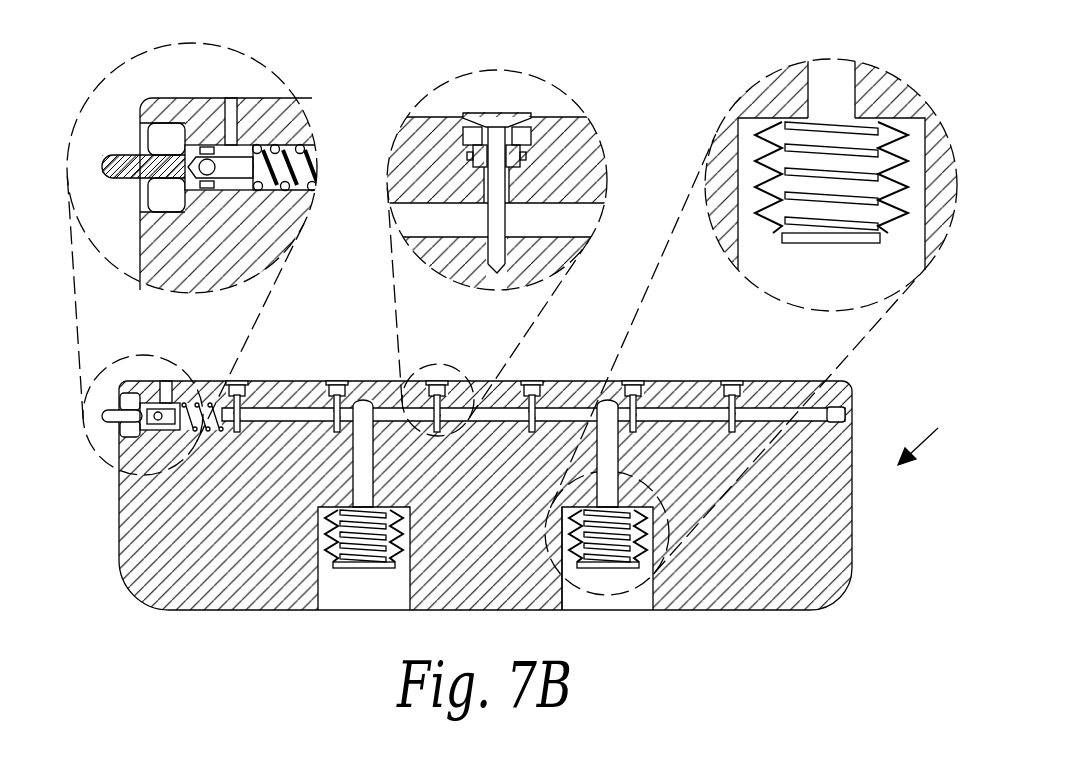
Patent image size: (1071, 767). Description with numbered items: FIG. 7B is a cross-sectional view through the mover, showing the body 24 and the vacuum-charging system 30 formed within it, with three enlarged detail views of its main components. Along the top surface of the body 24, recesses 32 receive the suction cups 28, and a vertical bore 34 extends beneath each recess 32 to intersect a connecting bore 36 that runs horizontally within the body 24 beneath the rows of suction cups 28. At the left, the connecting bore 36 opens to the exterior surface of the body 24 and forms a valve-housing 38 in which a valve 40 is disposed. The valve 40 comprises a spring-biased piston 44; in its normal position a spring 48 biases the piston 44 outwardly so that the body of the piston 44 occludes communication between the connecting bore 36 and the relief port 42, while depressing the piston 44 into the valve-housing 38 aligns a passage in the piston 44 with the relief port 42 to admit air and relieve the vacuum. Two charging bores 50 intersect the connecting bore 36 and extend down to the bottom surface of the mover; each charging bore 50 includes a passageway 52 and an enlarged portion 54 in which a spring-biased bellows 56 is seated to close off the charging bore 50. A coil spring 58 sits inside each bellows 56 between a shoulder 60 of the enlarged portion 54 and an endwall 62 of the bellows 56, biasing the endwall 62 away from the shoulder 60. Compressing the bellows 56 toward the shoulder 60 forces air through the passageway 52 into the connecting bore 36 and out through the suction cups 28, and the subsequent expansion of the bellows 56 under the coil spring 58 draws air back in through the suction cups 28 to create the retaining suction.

The body 24 is at (826, 563).
The suction cups 28 is at (500, 117).
The vacuum-charging system 30 is at (930, 431).
The recesses 32 is at (463, 128).
The vertical bore 34 is at (508, 178).
The connecting bore 36 is at (300, 408).
The valve-housing 38 is at (182, 400).
The valve 40 is at (195, 133).
The relief port 42 is at (228, 100).
The piston 44 is at (102, 166).
The spring 48 is at (314, 145).
The charging bores 50 is at (738, 230).
The passageway 52 is at (857, 80).
The enlarged portion 54 is at (563, 560).
The bellows 56 is at (892, 232).
The coil spring 58 is at (800, 232).
The shoulder 60 is at (318, 545).
The endwall 62 is at (345, 575).